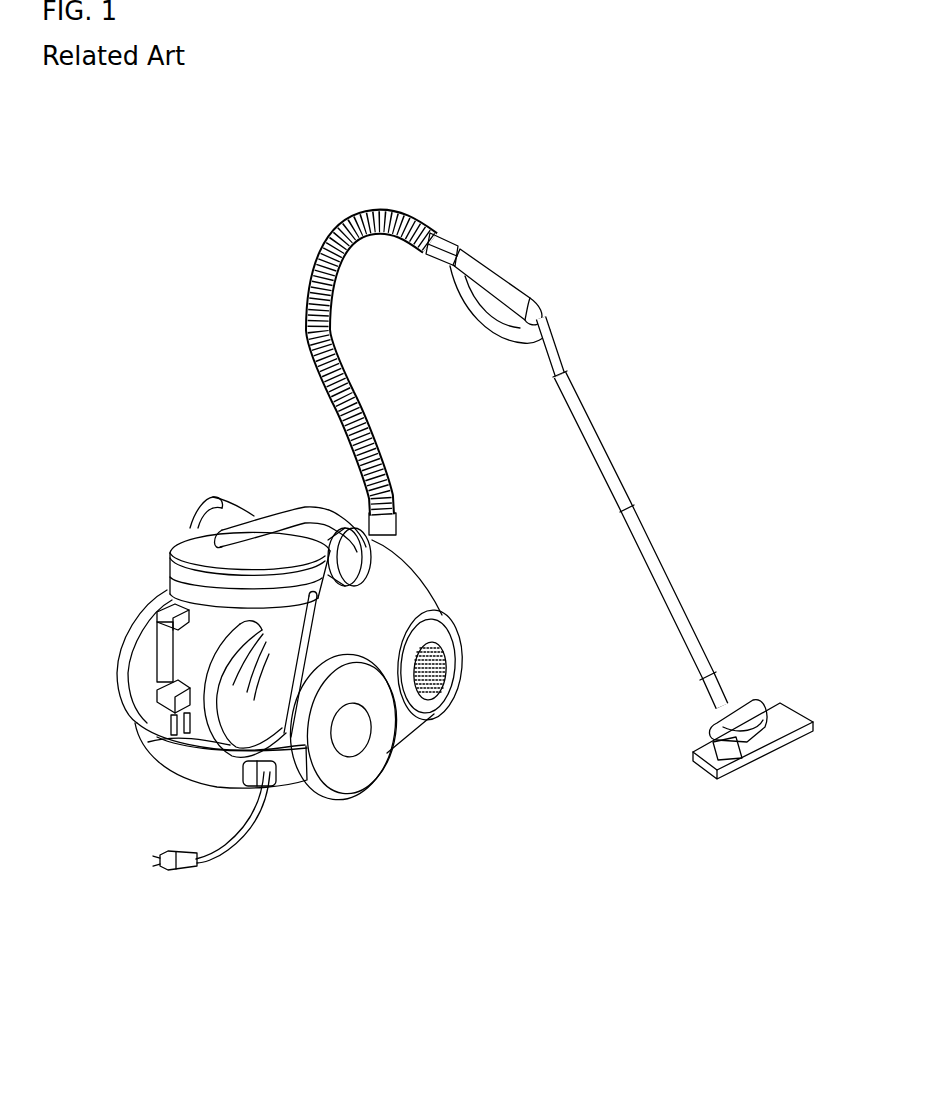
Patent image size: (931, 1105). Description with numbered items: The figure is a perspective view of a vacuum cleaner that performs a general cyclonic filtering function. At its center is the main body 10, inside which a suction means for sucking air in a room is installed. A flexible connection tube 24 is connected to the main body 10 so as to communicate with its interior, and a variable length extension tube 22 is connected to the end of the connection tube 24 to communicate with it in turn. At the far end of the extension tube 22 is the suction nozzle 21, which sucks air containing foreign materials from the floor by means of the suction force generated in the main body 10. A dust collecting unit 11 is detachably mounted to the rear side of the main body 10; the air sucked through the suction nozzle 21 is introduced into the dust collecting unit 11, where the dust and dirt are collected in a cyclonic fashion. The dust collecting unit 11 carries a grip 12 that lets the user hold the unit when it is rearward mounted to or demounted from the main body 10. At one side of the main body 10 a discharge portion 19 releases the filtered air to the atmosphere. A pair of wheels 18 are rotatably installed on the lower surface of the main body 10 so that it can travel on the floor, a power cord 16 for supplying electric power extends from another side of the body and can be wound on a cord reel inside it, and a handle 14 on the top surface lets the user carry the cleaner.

The main body 10 is at (171, 510).
The dust collecting unit 11 is at (138, 594).
The grip 12 is at (160, 643).
The handle 14 is at (173, 558).
The power cord 16 is at (237, 847).
The wheels 18 is at (360, 770).
The discharge portion 19 is at (446, 665).
The suction nozzle 21 is at (790, 713).
The variable length extension tube 22 is at (613, 477).
The flexible connection tube 24 is at (347, 217).